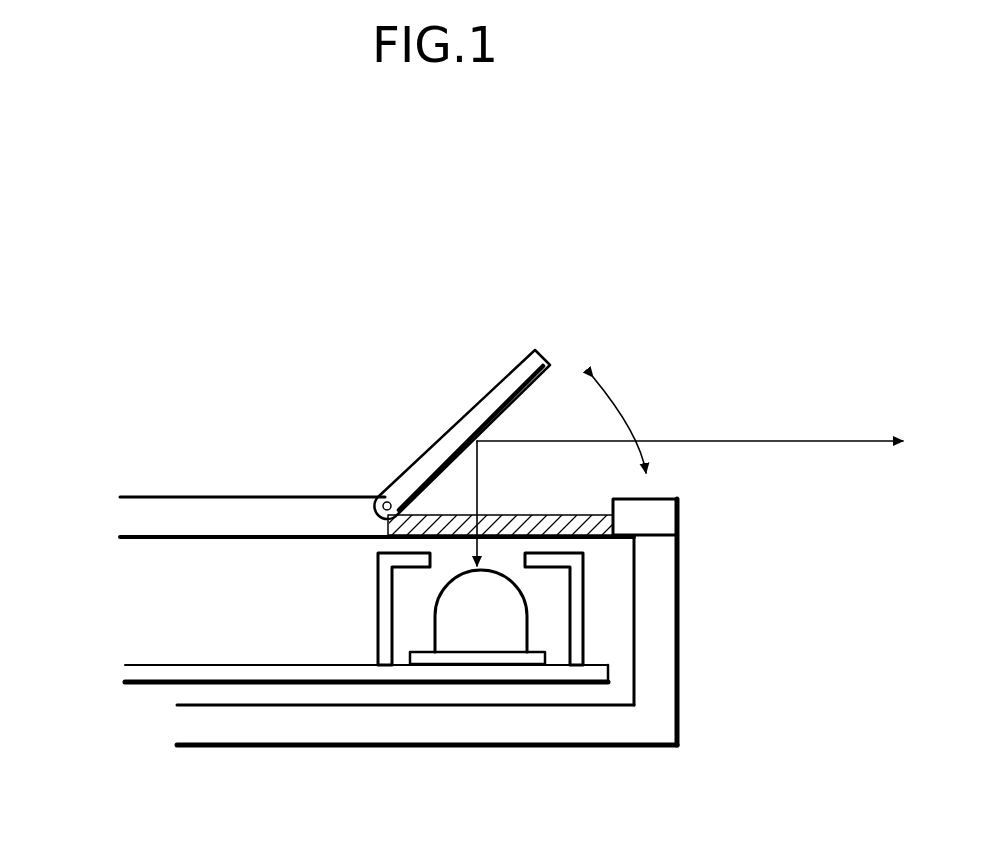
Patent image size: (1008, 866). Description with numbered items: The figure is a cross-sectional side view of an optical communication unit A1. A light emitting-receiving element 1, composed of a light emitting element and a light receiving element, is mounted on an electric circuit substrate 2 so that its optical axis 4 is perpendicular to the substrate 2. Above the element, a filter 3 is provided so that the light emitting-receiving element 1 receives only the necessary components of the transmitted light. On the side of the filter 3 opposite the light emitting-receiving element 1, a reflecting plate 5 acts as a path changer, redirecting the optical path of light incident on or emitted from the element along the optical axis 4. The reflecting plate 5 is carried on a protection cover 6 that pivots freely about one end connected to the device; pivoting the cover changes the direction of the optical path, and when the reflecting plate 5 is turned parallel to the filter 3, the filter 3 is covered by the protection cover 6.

The optical communication unit A1 is at (110, 595).
The light emitting-receiving element 1 is at (495, 633).
The electric circuit substrate 2 is at (285, 673).
The filter 3 is at (615, 525).
The optical axis 4 is at (478, 478).
The reflecting plate 5 is at (547, 362).
The protection cover 6 is at (442, 440).